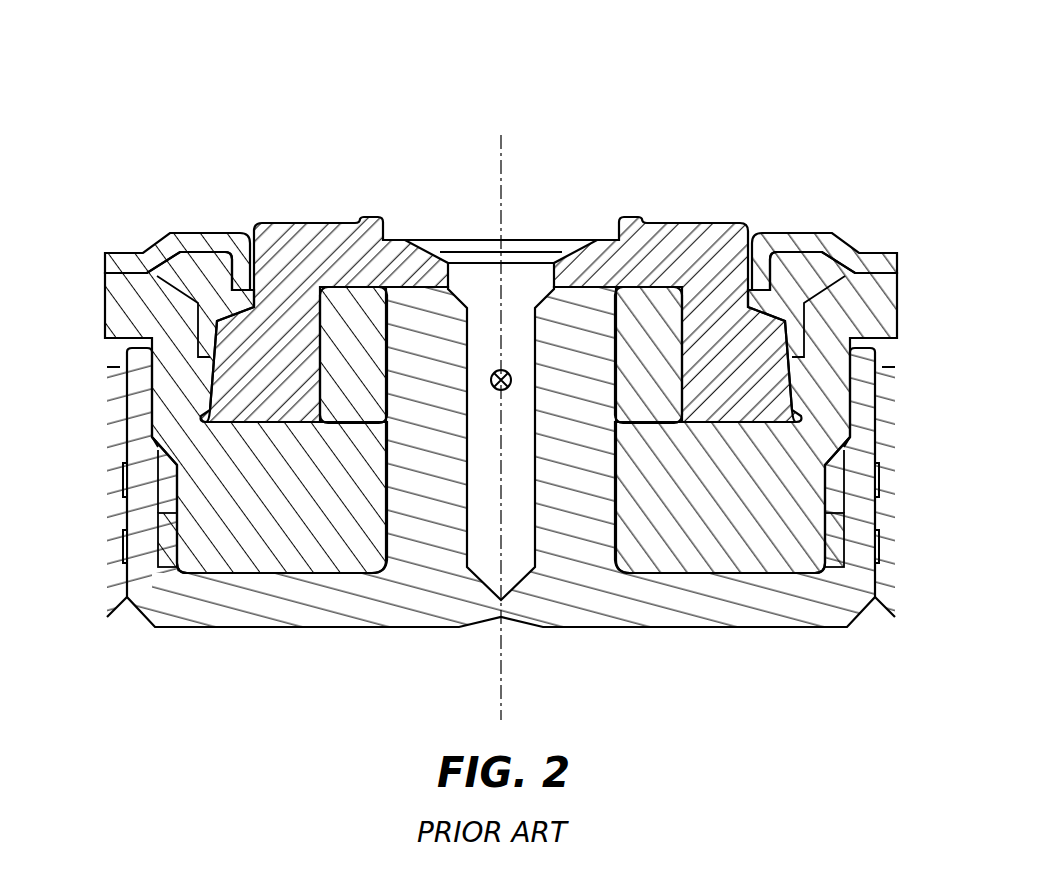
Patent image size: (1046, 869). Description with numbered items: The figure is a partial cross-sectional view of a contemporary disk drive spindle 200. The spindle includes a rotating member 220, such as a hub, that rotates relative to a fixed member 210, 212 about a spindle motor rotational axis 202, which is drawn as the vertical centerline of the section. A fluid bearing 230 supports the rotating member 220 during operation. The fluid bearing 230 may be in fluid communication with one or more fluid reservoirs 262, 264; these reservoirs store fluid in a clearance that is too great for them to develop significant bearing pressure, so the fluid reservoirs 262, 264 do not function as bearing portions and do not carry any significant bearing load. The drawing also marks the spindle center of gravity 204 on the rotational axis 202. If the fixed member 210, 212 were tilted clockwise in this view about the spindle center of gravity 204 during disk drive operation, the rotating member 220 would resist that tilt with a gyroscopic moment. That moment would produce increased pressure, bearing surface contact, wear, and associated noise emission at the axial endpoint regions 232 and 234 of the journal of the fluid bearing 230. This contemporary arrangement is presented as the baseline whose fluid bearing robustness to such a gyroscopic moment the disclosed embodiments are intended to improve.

The contemporary disk drive spindle 200 is at (606, 82).
The spindle motor rotational axis 202 is at (503, 162).
The spindle center of gravity 204 is at (497, 368).
The fixed member 210 is at (583, 543).
The fixed member 212 is at (287, 240).
The rotating member 220 is at (705, 543).
The fluid bearing 230 is at (387, 437).
The axial endpoint region 232 is at (388, 537).
The axial endpoint region 234 is at (690, 283).
The fluid reservoir 262 is at (203, 383).
The fluid reservoir 264 is at (177, 580).